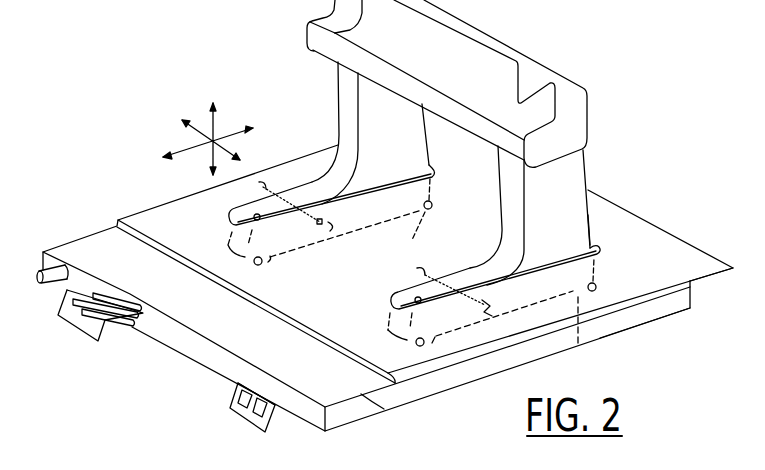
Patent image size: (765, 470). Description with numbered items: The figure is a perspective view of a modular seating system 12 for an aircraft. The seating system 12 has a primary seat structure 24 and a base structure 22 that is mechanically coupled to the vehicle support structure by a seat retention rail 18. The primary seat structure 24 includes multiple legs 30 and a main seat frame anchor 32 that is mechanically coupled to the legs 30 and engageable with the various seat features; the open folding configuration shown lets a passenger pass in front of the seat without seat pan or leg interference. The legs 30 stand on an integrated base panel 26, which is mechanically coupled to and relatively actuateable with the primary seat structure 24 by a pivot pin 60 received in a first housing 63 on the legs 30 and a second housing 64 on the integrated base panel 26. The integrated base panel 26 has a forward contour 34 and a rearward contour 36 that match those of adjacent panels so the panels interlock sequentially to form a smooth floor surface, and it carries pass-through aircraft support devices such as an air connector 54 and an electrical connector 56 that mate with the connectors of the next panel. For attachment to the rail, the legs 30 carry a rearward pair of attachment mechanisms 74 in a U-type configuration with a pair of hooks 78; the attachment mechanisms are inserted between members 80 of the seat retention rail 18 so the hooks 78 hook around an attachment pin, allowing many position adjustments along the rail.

The modular seating system 12 is at (647, 53).
The seat retention rail 18 is at (74, 331).
The base structure 22 is at (110, 336).
The primary seat structure 24 is at (588, 150).
The integrated base panel 26 is at (660, 230).
The legs 30 is at (430, 118).
The main seat frame anchor 32 is at (487, 27).
The forward contour 34 is at (383, 408).
The rearward contour 36 is at (693, 290).
The air connector 54 is at (41, 285).
The electrical connector 56 is at (118, 297).
The pivot pin 60 is at (356, 236).
The first housing 63 is at (590, 225).
The second housing 64 is at (650, 322).
The rearward pair of attachment mechanisms 74 is at (610, 358).
The hooks 78 is at (445, 207).
The members 80 is at (237, 387).